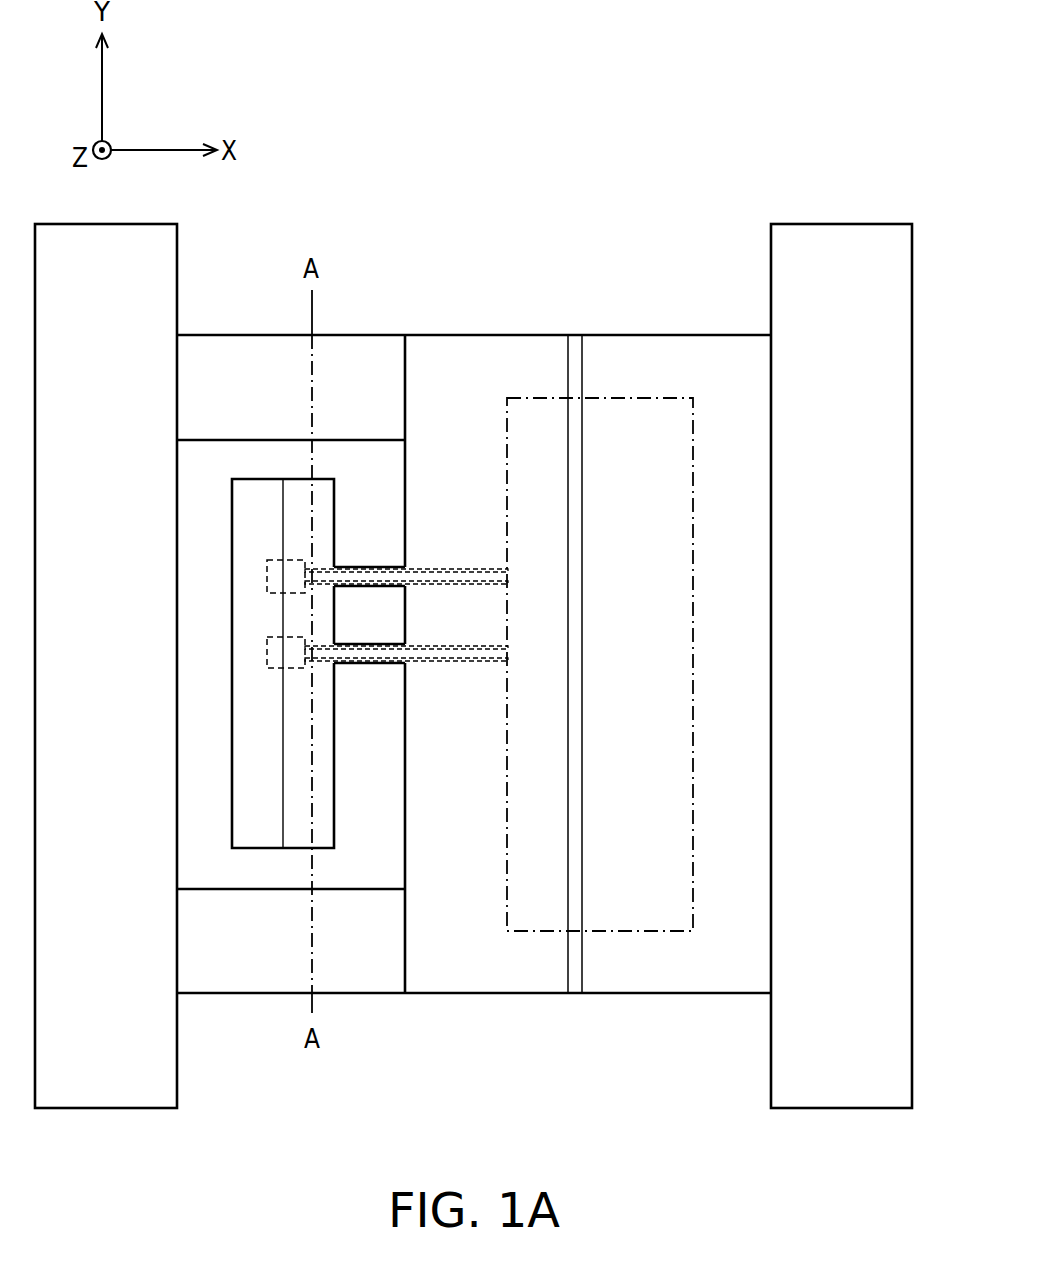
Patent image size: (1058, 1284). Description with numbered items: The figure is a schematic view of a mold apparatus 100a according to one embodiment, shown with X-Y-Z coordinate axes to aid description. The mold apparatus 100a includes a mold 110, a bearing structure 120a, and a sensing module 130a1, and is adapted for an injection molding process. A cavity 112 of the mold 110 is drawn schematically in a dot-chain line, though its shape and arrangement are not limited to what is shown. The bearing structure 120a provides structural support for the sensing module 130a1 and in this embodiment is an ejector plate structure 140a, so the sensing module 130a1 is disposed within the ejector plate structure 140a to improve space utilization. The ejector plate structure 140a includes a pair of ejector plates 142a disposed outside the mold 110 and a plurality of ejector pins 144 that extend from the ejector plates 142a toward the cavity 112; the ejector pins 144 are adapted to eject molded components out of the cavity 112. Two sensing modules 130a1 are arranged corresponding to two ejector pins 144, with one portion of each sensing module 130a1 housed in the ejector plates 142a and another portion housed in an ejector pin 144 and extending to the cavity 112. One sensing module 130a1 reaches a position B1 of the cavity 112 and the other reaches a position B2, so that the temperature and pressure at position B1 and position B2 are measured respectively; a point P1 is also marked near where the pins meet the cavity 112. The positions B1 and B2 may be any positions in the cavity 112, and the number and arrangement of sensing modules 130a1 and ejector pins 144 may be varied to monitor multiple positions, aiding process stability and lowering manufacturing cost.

The mold apparatus 100a is at (594, 208).
The mold 110 is at (626, 335).
The cavity 112 is at (545, 398).
The bearing structure 120a is at (326, 479).
The ejector plate structure 140a is at (320, 568).
The ejector plates 142a is at (257, 840).
The ejector pins 144 is at (368, 566).
The sensing module 130a1 is at (266, 578).
The bonding position P1 is at (504, 565).
The position B1 is at (528, 582).
The position B2 is at (528, 662).